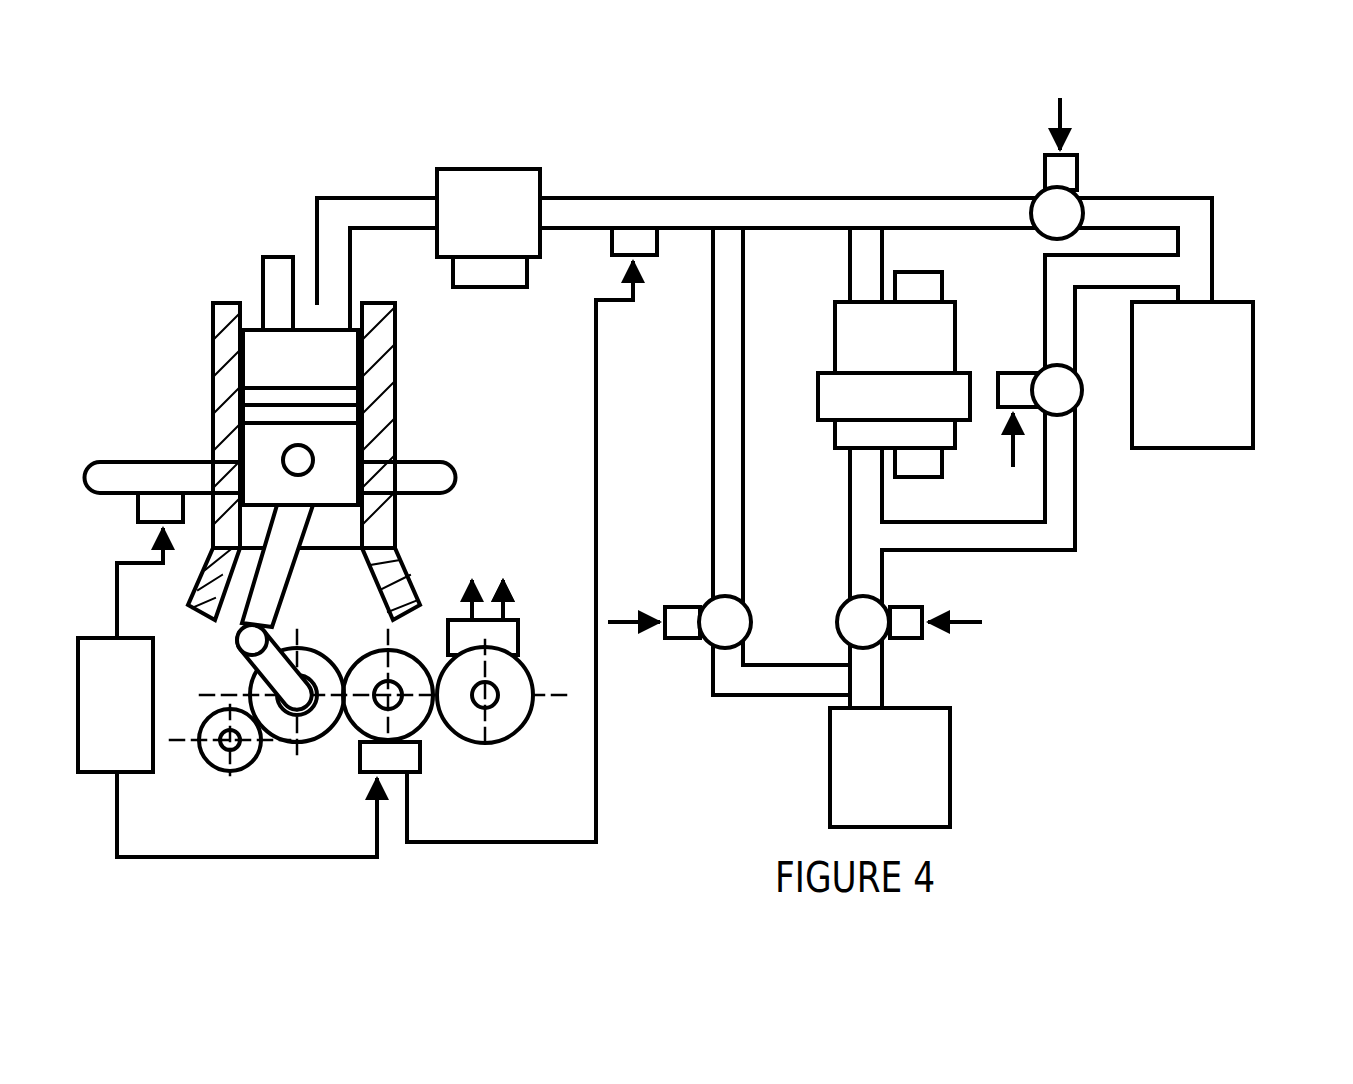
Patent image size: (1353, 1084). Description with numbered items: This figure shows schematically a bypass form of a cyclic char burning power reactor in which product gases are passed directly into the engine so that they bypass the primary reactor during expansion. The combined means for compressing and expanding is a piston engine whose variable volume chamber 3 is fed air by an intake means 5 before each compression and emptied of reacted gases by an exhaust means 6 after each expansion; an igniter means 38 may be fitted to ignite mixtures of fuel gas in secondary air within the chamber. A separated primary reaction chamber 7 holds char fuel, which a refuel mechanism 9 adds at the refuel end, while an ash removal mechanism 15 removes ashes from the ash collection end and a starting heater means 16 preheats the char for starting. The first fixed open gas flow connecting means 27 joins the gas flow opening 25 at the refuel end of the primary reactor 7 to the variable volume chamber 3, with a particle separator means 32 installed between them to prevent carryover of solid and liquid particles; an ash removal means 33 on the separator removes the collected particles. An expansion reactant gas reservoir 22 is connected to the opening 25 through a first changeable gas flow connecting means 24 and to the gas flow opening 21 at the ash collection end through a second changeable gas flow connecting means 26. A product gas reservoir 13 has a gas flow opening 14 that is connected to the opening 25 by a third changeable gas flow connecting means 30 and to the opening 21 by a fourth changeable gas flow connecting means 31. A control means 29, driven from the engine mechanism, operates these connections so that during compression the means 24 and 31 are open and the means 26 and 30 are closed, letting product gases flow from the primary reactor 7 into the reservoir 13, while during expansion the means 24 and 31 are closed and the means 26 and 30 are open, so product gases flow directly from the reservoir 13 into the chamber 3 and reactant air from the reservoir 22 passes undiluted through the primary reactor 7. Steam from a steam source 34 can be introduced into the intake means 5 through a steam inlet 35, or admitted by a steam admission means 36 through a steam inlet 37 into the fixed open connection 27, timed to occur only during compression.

The variable volume chamber 3 is at (262, 358).
The intake means 5 is at (138, 470).
The exhaust means 6 is at (425, 470).
The primary reaction chamber 7 is at (855, 345).
The refuel mechanism 9 is at (910, 290).
The product gas reservoir 13 is at (860, 785).
The product gas reservoir gas flow opening 14 is at (858, 712).
The ash removal mechanism 15 is at (918, 460).
The starting heater means 16 is at (830, 400).
The gas flow opening 21 is at (868, 455).
The expansion reactant gas reservoir 22 is at (1215, 410).
The first changeable gas flow connecting means 24 is at (1060, 210).
The gas flow opening 25 is at (862, 300).
The second changeable gas flow connecting means 26 is at (1060, 395).
The first fixed open gas flow connecting means 27 is at (682, 197).
The control means 29 is at (500, 720).
The third changeable gas flow connecting means 30 is at (718, 628).
The fourth changeable gas flow connecting means 31 is at (868, 620).
The particle separator means 32 is at (475, 192).
The ash removal means 33 is at (492, 273).
The steam source 34 is at (95, 745).
The steam inlet 35 is at (145, 505).
The steam admission means 36 is at (400, 755).
The steam inlet 37 is at (637, 240).
The igniter means 38 is at (275, 290).